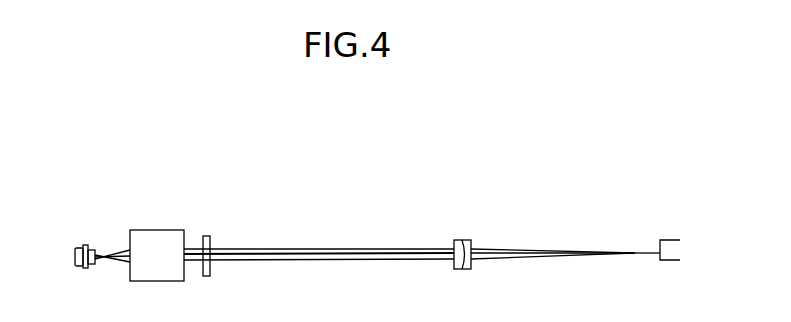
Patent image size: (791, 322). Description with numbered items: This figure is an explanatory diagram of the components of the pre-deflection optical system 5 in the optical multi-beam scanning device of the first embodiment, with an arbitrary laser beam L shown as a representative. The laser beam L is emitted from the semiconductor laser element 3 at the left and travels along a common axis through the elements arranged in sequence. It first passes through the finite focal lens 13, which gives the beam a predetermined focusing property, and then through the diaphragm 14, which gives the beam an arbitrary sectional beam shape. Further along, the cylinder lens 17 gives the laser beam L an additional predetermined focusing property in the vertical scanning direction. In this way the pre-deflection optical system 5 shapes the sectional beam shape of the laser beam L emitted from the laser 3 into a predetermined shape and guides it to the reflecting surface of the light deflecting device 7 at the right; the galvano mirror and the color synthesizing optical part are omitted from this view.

The semiconductor laser element 3 is at (93, 246).
The pre-deflection optical system 5 is at (359, 179).
The finite focal lens 13 is at (159, 237).
The diaphragm 14 is at (207, 236).
The cylinder lens 17 is at (450, 242).
The laser beam L is at (577, 250).
The light deflecting device 7 is at (670, 239).